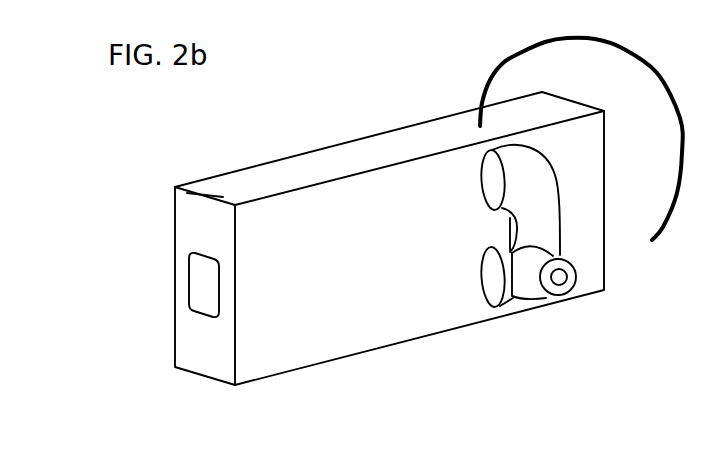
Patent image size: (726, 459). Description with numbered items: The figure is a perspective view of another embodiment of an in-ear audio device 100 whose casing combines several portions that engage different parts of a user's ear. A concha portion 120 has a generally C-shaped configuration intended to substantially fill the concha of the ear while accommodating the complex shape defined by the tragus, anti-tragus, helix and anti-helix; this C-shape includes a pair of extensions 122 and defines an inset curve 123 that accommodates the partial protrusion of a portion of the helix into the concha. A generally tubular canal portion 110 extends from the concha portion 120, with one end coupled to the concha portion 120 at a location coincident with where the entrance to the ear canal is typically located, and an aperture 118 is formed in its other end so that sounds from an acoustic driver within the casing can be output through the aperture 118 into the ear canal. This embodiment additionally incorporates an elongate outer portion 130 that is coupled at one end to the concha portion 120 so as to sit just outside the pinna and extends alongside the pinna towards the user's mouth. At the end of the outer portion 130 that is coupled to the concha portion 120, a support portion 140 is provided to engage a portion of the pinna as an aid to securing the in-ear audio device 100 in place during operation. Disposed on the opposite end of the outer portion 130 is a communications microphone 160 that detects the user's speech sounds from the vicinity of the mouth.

The in-ear audio device 100 is at (200, 110).
The canal portion 110 is at (528, 287).
The aperture 118 is at (558, 278).
The concha portion 120 is at (542, 193).
The extensions 122 is at (490, 172).
The inset curve 123 is at (518, 225).
The outer portion 130 is at (373, 147).
The support portion 140 is at (505, 63).
The communications microphone 160 is at (205, 286).